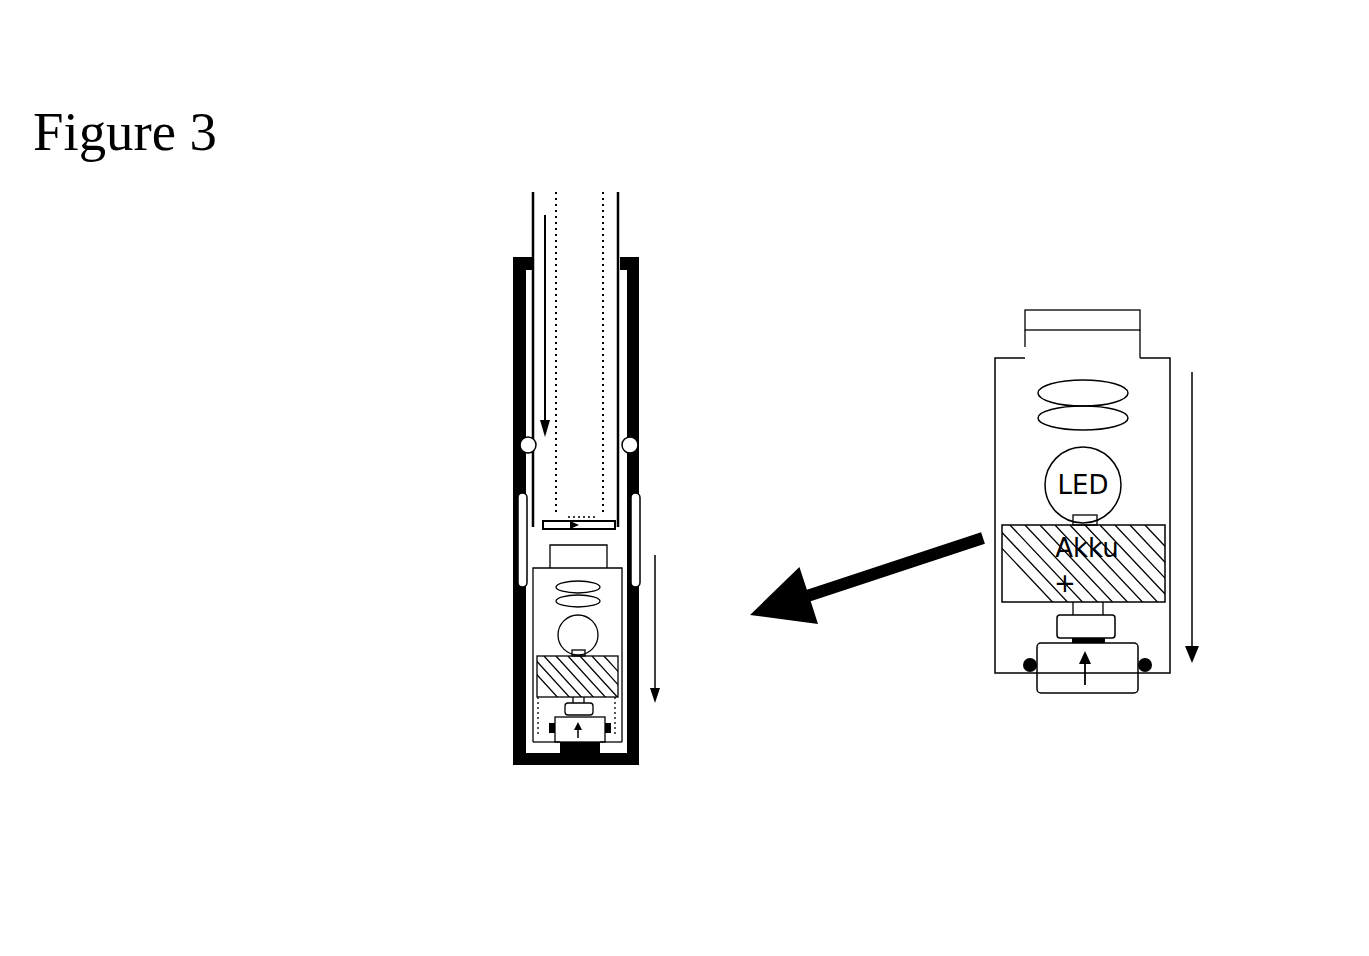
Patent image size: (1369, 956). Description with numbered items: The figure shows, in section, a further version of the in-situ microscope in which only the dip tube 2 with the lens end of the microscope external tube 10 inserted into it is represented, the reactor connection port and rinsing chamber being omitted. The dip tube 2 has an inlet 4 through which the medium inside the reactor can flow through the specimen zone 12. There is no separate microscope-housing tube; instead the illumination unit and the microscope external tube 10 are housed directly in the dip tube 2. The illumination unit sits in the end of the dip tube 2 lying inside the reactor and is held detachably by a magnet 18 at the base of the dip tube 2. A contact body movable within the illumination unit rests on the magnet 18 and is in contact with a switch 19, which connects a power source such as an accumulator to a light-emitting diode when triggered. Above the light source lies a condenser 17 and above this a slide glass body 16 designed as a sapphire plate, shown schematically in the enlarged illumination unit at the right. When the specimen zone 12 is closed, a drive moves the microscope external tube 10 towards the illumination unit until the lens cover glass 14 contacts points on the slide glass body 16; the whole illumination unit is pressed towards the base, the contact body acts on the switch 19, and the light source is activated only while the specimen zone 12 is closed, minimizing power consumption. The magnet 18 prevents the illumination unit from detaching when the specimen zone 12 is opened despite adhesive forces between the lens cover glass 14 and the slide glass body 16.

The dip tube 2 is at (642, 392).
The inlet 4 is at (500, 513).
The microscope external tube 10 is at (636, 215).
The specimen zone 12 is at (621, 539).
The lens cover glass 14 is at (533, 530).
The slide glass body 16 is at (575, 555).
The condenser 17 is at (1107, 397).
The magnet 18 is at (603, 745).
The switch 19 is at (1092, 625).